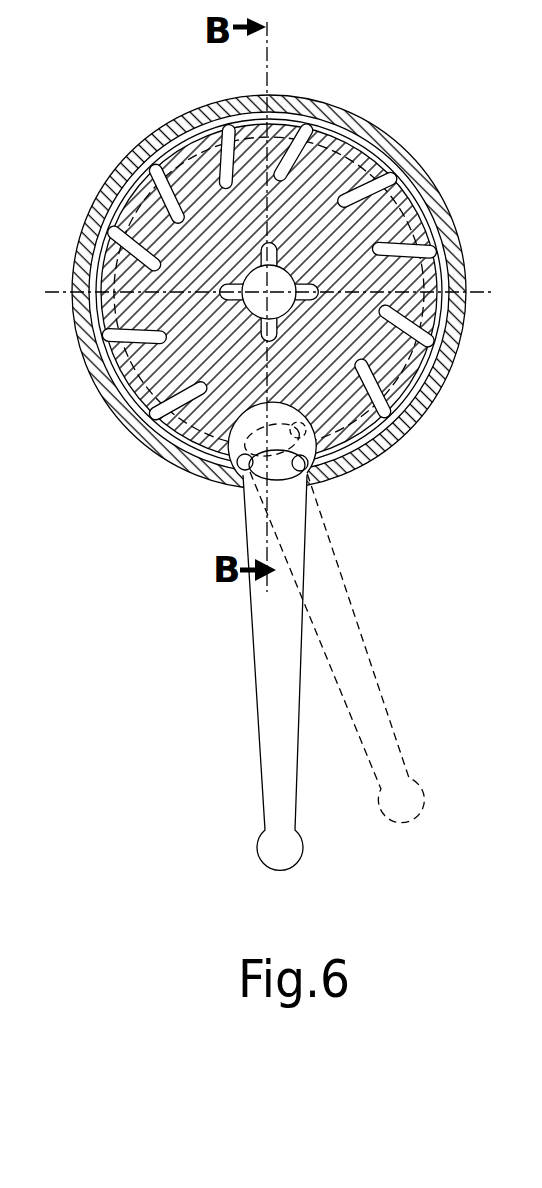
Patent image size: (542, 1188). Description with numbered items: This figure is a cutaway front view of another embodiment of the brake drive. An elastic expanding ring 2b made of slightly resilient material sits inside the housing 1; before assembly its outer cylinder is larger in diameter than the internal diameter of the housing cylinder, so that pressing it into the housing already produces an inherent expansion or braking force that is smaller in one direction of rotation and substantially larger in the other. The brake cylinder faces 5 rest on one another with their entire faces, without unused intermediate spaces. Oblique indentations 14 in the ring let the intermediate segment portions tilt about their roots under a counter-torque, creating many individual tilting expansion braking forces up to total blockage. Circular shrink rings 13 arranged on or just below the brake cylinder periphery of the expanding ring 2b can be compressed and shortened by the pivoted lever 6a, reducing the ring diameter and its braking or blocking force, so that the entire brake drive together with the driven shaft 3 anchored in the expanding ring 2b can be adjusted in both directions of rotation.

The housing 1 is at (388, 148).
The elastic expanding ring 2b is at (325, 240).
The driven shaft 3 is at (283, 307).
The brake cylinder faces 5 is at (450, 323).
The circular shrink rings 13 is at (120, 232).
The indentations 14 is at (142, 336).
The pivoted lever 6a is at (277, 582).